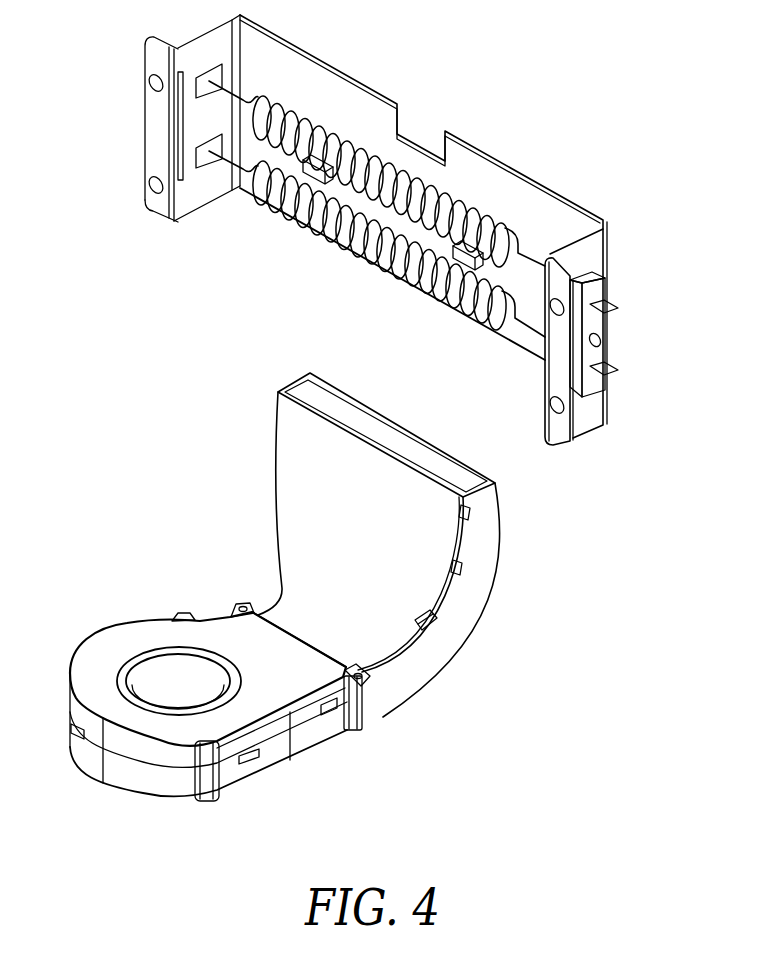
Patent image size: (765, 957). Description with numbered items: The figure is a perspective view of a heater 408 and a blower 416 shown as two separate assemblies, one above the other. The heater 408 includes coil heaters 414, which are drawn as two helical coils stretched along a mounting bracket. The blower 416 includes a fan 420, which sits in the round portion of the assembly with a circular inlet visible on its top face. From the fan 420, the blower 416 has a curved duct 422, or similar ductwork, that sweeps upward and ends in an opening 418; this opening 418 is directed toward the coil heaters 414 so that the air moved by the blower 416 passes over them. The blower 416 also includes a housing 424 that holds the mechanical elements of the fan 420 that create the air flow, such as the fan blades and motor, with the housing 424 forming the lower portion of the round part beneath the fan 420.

The heater 408 is at (601, 116).
The coil heaters 414 is at (300, 110).
The blower 416 is at (282, 603).
The opening 418 is at (439, 470).
The fan 420 is at (98, 658).
The curved duct 422 is at (468, 609).
The housing 424 is at (142, 778).